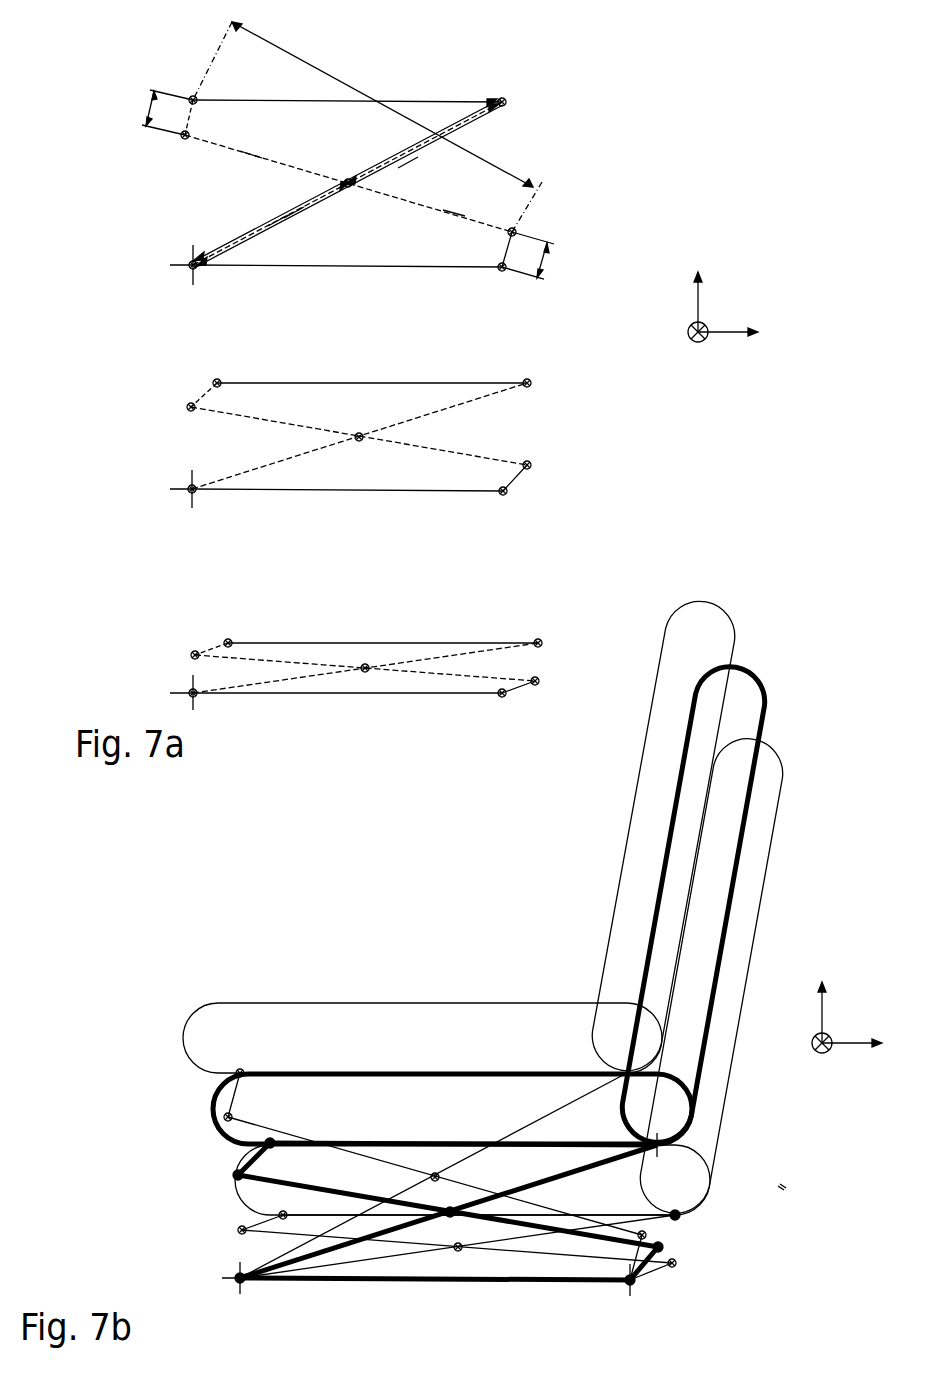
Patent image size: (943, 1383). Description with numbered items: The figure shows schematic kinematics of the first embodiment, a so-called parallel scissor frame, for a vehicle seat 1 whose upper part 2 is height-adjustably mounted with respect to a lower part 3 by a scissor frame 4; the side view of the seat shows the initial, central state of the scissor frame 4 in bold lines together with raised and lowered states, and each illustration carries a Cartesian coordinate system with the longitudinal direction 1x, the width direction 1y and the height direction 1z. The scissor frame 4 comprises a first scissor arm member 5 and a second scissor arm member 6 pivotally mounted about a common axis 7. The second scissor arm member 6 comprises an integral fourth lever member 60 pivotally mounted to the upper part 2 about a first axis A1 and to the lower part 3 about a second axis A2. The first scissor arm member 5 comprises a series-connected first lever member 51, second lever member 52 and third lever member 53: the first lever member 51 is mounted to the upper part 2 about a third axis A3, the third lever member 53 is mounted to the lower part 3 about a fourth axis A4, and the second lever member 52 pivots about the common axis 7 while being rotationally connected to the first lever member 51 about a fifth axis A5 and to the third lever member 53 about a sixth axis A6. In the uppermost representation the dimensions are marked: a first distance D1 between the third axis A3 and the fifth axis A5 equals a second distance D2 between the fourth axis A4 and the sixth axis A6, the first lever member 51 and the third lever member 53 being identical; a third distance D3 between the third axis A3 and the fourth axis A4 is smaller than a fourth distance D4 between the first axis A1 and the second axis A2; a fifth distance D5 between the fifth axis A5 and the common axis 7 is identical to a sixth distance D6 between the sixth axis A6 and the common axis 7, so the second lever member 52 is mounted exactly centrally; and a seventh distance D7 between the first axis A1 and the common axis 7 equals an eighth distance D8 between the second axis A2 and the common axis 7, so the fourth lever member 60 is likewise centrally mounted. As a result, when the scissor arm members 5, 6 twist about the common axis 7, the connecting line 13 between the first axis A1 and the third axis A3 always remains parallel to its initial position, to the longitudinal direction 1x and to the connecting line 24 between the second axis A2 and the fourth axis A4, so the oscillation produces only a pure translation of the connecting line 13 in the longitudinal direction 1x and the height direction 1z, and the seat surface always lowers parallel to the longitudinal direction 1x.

In FIG. 7b, the vehicle seat 1 is at (444, 805).
In FIG. 7a, the upper part 2 is at (335, 100).
In FIG. 7b, the upper part 2 is at (826, 820).
In FIG. 7a, the lower part 3 is at (420, 268).
In FIG. 7b, the lower part 3 is at (540, 1318).
In FIG. 7a, the scissor frame 4 is at (122, 210).
In FIG. 7b, the scissor frame 4 is at (785, 1186).
In FIG. 7a, the first scissor arm member 5 is at (231, 168).
In FIG. 7b, the first scissor arm member 5 is at (781, 1188).
In FIG. 7a, the second scissor arm member 6 is at (231, 220).
In FIG. 7b, the second scissor arm member 6 is at (783, 1186).
In FIG. 7a, the common axis 7 is at (346, 180).
In FIG. 7b, the common axis 7 is at (452, 1222).
In FIG. 7a, the connecting line 13 is at (410, 100).
In FIG. 7b, the connecting line 13 is at (405, 1141).
In FIG. 7a, the connecting line 24 is at (468, 268).
In FIG. 7b, the connecting line 24 is at (342, 1284).
In FIG. 7b, the first lever member 51 is at (250, 1158).
In FIG. 7a, the second lever member 52 is at (457, 217).
In FIG. 7b, the second lever member 52 is at (350, 1193).
In FIG. 7b, the third lever member 53 is at (655, 1268).
In FIG. 7a, the fourth lever member 60 is at (400, 158).
In FIG. 7b, the fourth lever member 60 is at (567, 1176).
In FIG. 7a, the first axis A1 is at (502, 100).
In FIG. 7b, the first axis A1 is at (660, 1152).
In FIG. 7a, the second axis A2 is at (189, 268).
In FIG. 7b, the second axis A2 is at (233, 1284).
In FIG. 7a, the third axis A3 is at (193, 98).
In FIG. 7b, the third axis A3 is at (280, 1138).
In FIG. 7a, the fourth axis A4 is at (502, 272).
In FIG. 7b, the fourth axis A4 is at (625, 1290).
In FIG. 7a, the fifth axis A5 is at (185, 139).
In FIG. 7b, the fifth axis A5 is at (230, 1183).
In FIG. 7a, the sixth axis A6 is at (511, 228).
In FIG. 7b, the sixth axis A6 is at (665, 1242).
In FIG. 7a, the first distance D1 is at (150, 108).
In FIG. 7a, the second distance D2 is at (555, 266).
In FIG. 7a, the third distance D3 is at (510, 177).
In FIG. 7a, the fourth distance D4 is at (277, 222).
In FIG. 7a, the fifth distance D5 is at (250, 153).
In FIG. 7a, the sixth distance D6 is at (453, 210).
In FIG. 7a, the seventh distance D7 is at (407, 163).
In FIG. 7a, the eighth distance D8 is at (295, 224).
In FIG. 7a, the longitudinal direction 1x is at (735, 333).
In FIG. 7b, the longitudinal direction 1x is at (858, 1044).
In FIG. 7a, the width direction 1y is at (690, 340).
In FIG. 7b, the width direction 1y is at (814, 1050).
In FIG. 7a, the height direction 1z is at (697, 300).
In FIG. 7b, the height direction 1z is at (821, 1014).